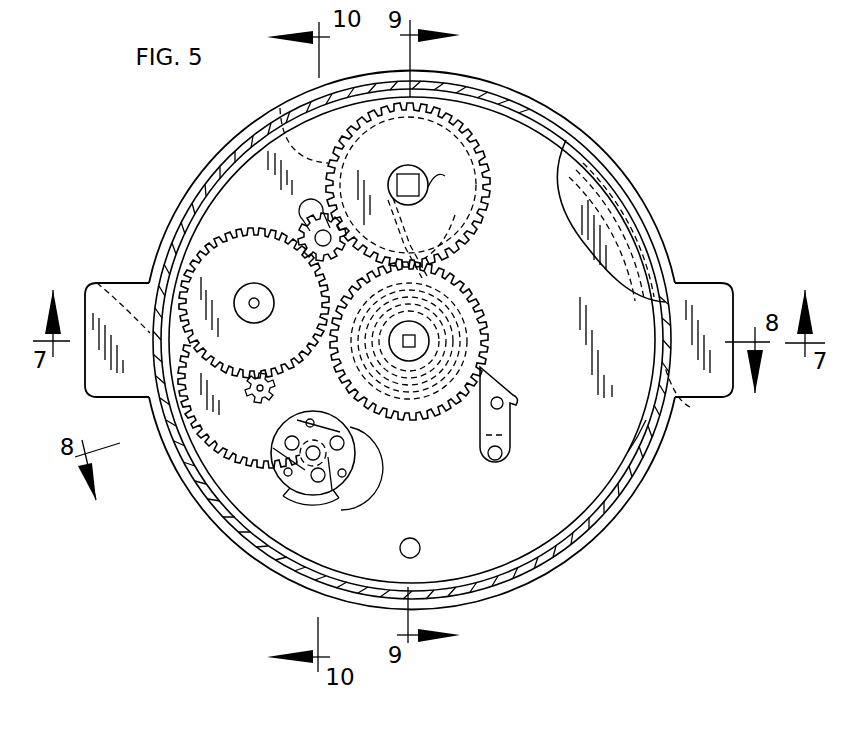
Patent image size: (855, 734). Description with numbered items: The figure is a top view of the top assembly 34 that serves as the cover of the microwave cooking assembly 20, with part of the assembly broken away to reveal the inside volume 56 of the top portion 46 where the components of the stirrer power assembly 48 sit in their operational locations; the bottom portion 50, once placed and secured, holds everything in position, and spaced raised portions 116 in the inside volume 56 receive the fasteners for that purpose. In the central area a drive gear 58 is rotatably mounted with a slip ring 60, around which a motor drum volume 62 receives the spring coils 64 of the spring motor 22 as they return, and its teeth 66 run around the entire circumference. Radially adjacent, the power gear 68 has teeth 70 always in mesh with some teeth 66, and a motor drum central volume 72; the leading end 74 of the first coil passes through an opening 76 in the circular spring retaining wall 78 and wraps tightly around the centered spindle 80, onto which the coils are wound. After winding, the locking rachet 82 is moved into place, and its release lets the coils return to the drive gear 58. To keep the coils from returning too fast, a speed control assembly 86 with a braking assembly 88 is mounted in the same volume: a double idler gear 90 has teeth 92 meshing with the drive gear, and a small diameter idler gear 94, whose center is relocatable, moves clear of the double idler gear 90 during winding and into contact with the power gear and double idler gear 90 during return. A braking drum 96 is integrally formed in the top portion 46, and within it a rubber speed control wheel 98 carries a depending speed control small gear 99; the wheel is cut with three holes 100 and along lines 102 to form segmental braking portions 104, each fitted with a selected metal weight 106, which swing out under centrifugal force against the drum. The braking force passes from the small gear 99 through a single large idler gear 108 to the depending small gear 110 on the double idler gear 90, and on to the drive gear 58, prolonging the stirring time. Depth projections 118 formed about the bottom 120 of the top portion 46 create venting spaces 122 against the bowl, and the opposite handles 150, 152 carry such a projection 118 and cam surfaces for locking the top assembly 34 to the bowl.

The microwave cooking assembly 20 is at (623, 498).
The spring motor 22 is at (450, 282).
The top assembly 34 is at (590, 197).
The top portion 46 is at (607, 237).
The stirrer power assembly 48 is at (187, 434).
The bottom portion 50 is at (525, 500).
The inside volume 56 is at (481, 523).
The drive gear 58 is at (480, 286).
The slip ring 60 is at (482, 318).
The motor drum volume 62 is at (482, 330).
The spring coils 64 is at (485, 345).
The teeth 66 is at (486, 300).
The power gear 68 is at (457, 170).
The teeth 70 is at (490, 137).
The motor drum central volume 72 is at (540, 140).
The leading end 74 is at (400, 165).
The opening 76 is at (492, 221).
The circular spring retaining wall 78 is at (280, 108).
The centered spindle 80 is at (428, 187).
The locking rachet 82 is at (520, 437).
The speed control assembly 86 is at (262, 477).
The braking assembly 88 is at (287, 503).
The double idler gear 90 is at (214, 245).
The teeth 92 is at (183, 252).
The small diameter idler gear 94 is at (300, 223).
The braking drum 96 is at (322, 492).
The speed control wheel 98 is at (322, 498).
The speed control small gear 99 is at (297, 507).
The holes 100 is at (350, 442).
The lines 102 is at (366, 461).
The segmental braking portions 104 is at (330, 482).
The metal weight 106 is at (353, 493).
The single large idler gear 108 is at (183, 380).
The depending small gear 110 is at (258, 400).
The spaced raised portions 116 is at (421, 551).
The depth projections 118 is at (440, 600).
The bottom 120 is at (650, 430).
The venting spaces 122 is at (567, 530).
The handle 150 is at (688, 283).
The handle 152 is at (123, 283).